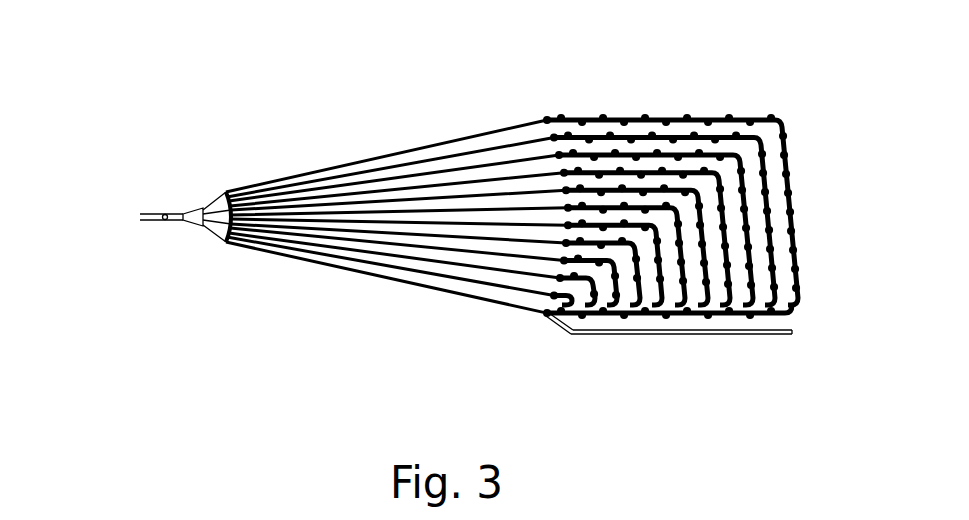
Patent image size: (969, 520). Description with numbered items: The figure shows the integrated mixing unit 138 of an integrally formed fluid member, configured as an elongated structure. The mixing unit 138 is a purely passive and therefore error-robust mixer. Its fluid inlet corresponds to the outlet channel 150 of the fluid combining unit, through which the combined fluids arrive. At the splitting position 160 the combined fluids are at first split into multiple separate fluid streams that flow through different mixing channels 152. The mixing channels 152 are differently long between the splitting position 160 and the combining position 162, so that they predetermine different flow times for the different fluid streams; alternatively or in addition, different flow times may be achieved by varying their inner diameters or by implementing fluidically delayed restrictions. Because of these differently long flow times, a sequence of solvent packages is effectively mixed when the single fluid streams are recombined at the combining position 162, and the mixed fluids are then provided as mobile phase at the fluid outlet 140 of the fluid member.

The mixing unit 138 is at (162, 172).
The fluid outlet 140 is at (770, 335).
The outlet channel 150 is at (166, 213).
The mixing channels 152 is at (318, 168).
The splitting position 160 is at (196, 209).
The combining position 162 is at (547, 314).